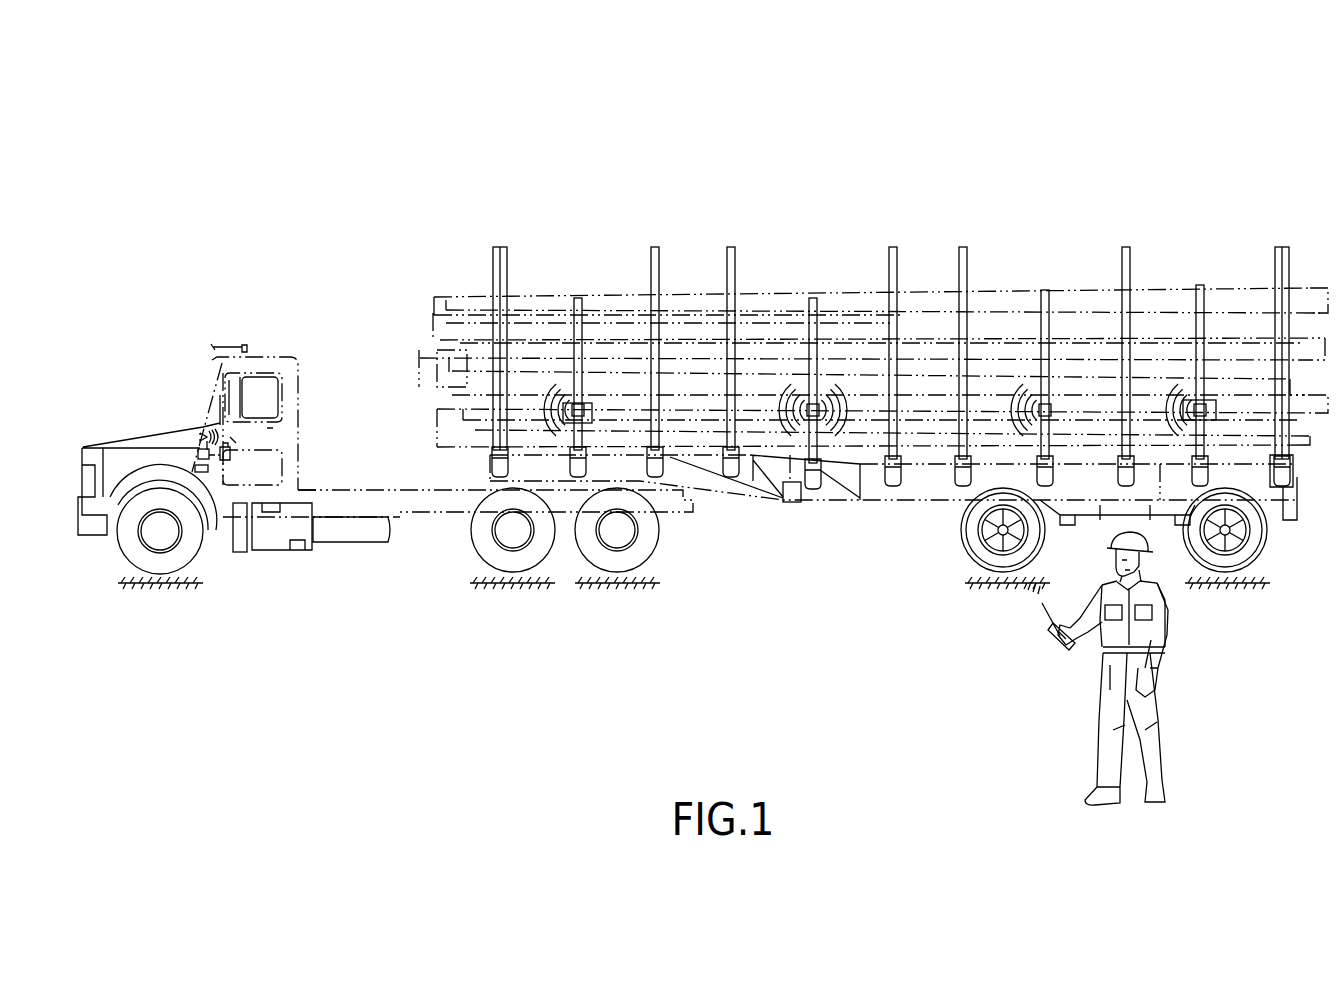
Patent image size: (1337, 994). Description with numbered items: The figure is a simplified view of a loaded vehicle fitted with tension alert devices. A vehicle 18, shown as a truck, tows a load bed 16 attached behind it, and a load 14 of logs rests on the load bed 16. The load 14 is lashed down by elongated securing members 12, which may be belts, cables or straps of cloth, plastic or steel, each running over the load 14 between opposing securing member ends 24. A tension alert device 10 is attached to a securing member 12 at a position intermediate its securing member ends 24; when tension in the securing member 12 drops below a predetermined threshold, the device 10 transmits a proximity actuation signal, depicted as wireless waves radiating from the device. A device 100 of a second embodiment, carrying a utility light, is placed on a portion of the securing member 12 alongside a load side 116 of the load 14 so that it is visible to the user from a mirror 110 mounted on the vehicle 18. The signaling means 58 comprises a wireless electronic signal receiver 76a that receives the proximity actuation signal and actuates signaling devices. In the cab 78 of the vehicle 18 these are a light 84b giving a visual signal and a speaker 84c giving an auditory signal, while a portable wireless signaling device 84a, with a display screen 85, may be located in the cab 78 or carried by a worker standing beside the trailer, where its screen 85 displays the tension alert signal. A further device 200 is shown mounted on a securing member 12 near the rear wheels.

The tension alert device 10 is at (831, 396).
The securing member 12 is at (578, 298).
The load 14 is at (776, 312).
The load bed 16 is at (790, 503).
The vehicle 18 is at (86, 468).
The securing member ends 24 is at (535, 485).
The signaling means 58 is at (263, 471).
The wireless electronic signal receiver 76a is at (195, 452).
The cab 78 is at (268, 407).
The portable wireless signaling device 84a is at (232, 451).
The light 84b is at (195, 468).
The speaker 84c is at (202, 437).
The display screen 85 is at (655, 511).
The tension alert device of second embodiment 100 is at (596, 400).
The mirror 110 is at (222, 400).
The load side 116 is at (448, 375).
The strap tension sensor 200 is at (1037, 440).